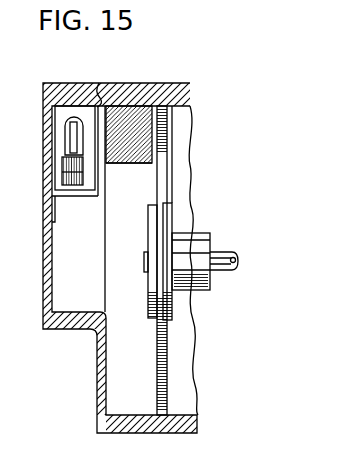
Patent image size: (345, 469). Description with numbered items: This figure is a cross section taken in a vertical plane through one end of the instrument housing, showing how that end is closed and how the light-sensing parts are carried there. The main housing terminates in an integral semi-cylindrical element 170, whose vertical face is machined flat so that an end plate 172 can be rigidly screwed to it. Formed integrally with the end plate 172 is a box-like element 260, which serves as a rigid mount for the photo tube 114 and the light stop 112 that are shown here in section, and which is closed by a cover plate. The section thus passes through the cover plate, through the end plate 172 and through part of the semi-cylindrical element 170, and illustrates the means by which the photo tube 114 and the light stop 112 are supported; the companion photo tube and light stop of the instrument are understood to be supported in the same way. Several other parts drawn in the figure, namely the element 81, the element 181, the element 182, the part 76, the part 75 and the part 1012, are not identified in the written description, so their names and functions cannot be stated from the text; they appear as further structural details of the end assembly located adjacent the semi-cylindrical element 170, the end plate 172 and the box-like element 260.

The light stop 112 is at (99, 83).
The support block 81 is at (136, 130).
The housing cover 181 is at (158, 84).
The photo tube 114 is at (77, 141).
The semi-cylindrical element 170 is at (185, 170).
The bearing block 182 is at (120, 165).
The pinion shaft 76 is at (230, 226).
The housing side wall 1012 is at (52, 296).
The box-like element 260 is at (68, 326).
The end plate 172 is at (104, 372).
The rack 75 is at (170, 386).